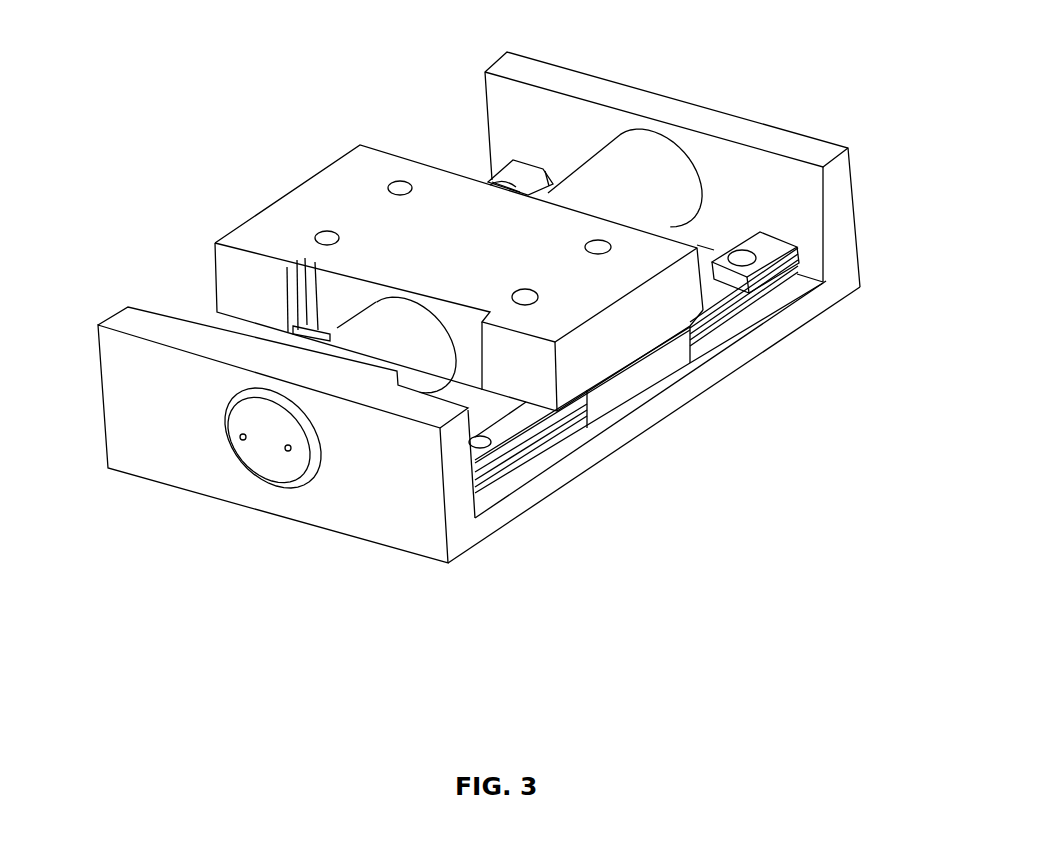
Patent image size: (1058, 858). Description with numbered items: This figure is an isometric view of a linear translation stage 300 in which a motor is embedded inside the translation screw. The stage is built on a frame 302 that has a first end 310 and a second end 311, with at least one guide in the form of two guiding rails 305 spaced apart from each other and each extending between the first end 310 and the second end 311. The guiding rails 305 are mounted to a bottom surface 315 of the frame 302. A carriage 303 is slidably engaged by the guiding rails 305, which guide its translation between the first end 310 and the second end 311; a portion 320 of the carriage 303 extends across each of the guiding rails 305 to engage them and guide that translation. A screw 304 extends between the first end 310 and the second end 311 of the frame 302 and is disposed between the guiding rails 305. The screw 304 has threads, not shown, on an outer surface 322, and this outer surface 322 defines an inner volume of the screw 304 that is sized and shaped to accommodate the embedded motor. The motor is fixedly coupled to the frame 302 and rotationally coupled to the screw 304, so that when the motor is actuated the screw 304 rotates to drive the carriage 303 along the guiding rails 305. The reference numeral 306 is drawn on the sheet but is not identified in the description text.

The linear translation stage 300 is at (882, 50).
The frame 302 is at (513, 133).
The carriage 303 is at (372, 218).
The screw 304 is at (645, 197).
The guiding rails 305 is at (716, 271).
The front plate bearing 306 is at (265, 358).
The first end 310 is at (82, 306).
The second end 311 is at (462, 51).
The bottom surface 315 is at (520, 475).
The portion of carriage 320 is at (638, 375).
The outer surface 322 is at (636, 145).